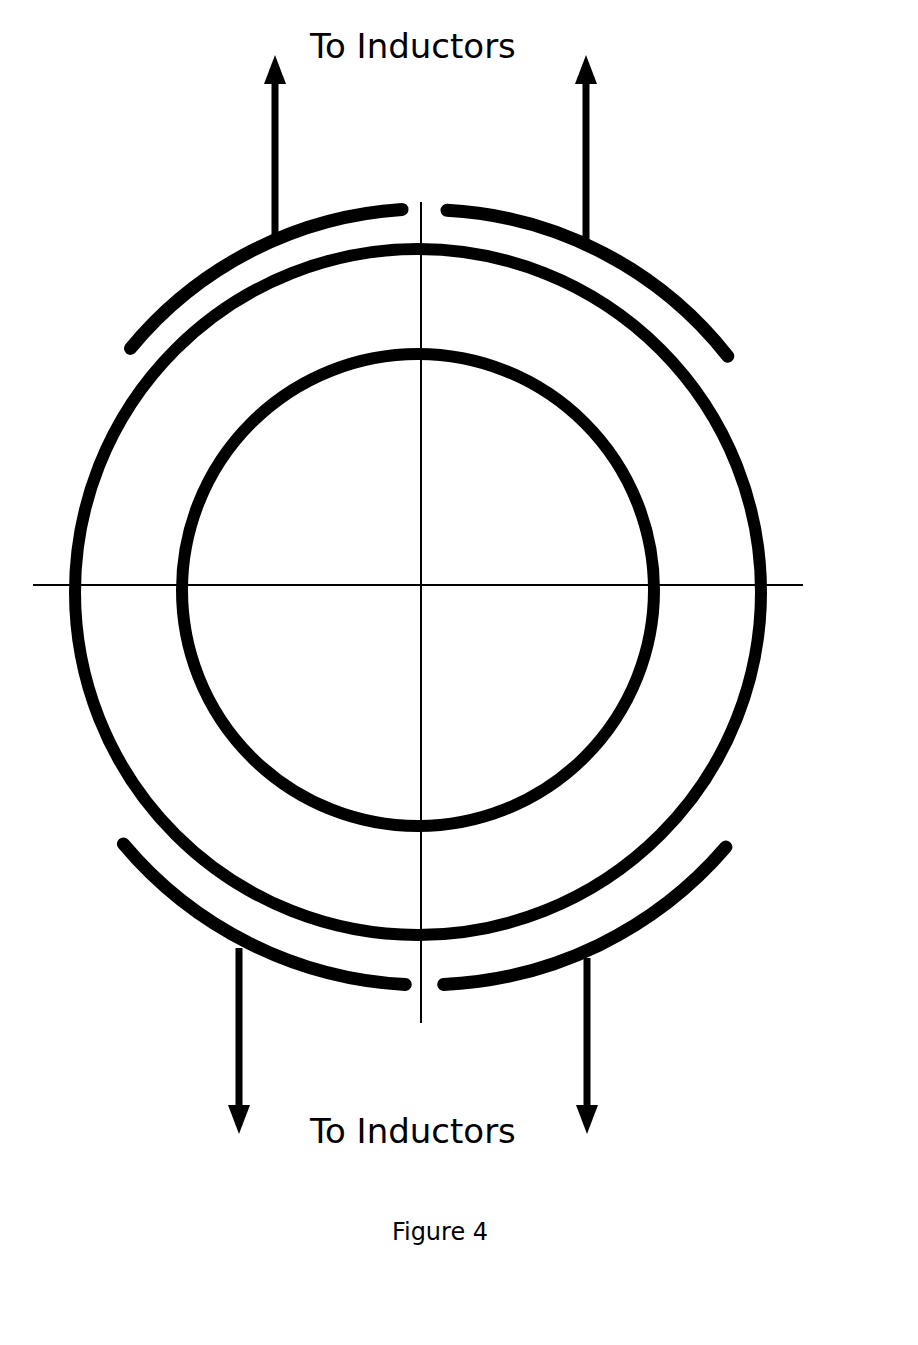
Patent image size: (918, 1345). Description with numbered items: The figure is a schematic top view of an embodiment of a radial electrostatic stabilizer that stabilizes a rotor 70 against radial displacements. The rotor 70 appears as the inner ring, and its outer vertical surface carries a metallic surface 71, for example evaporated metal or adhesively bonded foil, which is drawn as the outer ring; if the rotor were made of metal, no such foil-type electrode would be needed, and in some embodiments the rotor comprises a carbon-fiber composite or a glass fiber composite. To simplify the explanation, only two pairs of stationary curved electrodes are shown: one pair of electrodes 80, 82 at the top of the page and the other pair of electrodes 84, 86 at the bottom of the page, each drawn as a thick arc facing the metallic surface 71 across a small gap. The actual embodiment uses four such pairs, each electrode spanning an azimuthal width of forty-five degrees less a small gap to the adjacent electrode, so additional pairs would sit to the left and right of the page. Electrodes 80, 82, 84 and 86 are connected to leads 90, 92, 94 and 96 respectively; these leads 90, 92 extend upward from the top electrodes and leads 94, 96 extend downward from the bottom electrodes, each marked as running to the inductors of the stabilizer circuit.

The rotor 70 is at (418, 590).
The metallic surface 71 is at (755, 492).
The stationary curved electrode 80 is at (192, 288).
The stationary curved electrode 82 is at (668, 282).
The stationary curved electrode 84 is at (203, 930).
The stationary curved electrode 86 is at (652, 925).
The lead 90 is at (278, 172).
The lead 92 is at (583, 170).
The lead 94 is at (243, 996).
The lead 96 is at (583, 998).